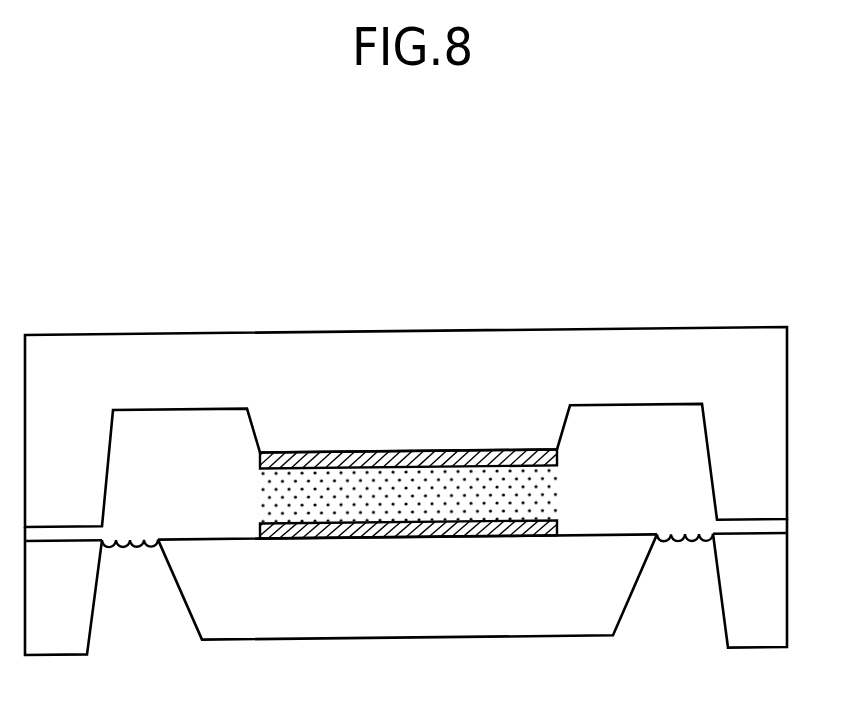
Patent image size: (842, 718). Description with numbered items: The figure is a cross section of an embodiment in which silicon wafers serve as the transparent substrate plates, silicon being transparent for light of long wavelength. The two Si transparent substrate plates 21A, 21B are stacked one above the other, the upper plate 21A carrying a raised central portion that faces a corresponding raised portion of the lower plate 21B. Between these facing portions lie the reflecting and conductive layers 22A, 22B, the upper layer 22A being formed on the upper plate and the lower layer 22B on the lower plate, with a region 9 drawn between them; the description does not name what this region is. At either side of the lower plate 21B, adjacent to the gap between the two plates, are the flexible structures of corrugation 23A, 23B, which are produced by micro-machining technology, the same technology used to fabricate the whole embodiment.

The Si transparent substrate plate 21A is at (405, 331).
The Si transparent substrate plate 21B is at (422, 640).
The reflecting and conductive layer 22A is at (405, 451).
The reflecting and conductive layer 22B is at (408, 540).
The piezoelectric layer 9 is at (560, 491).
The flexible structure of corrugation 23A is at (126, 552).
The flexible structure of corrugation 23B is at (683, 543).